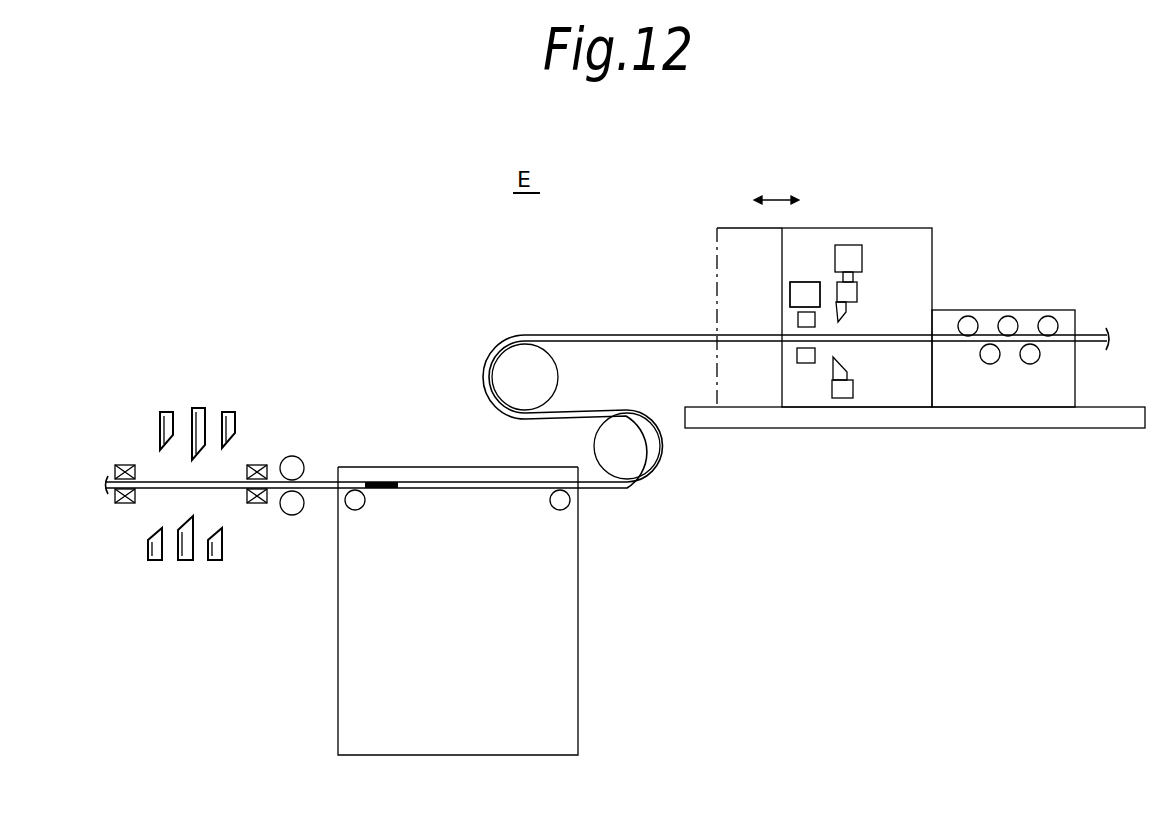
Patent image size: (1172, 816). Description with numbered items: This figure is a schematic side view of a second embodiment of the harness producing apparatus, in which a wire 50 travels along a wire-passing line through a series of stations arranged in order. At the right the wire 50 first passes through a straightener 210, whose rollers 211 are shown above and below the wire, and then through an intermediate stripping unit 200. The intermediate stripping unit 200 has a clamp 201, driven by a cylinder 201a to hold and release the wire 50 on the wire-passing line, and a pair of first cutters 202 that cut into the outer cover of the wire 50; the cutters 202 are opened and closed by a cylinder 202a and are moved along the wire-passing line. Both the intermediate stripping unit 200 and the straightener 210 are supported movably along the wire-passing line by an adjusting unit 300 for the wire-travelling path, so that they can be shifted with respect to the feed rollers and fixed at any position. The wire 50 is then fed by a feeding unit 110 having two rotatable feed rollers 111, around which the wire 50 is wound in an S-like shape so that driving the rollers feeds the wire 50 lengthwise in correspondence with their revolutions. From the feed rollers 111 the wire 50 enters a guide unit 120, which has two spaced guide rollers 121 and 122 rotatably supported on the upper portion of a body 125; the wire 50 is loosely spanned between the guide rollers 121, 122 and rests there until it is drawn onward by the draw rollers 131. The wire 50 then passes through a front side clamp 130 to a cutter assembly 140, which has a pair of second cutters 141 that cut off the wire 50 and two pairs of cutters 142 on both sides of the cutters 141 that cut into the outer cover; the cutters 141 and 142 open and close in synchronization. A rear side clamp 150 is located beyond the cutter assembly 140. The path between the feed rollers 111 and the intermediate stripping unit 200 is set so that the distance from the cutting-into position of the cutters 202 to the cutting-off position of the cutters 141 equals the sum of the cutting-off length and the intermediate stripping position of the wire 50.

The wire 50 is at (1083, 338).
The feeding unit 110 is at (690, 470).
The feed rollers 111 is at (655, 510).
The guide unit 120 is at (578, 628).
The guide roller 121 is at (560, 502).
The guide roller 122 is at (355, 502).
The body 125 is at (578, 596).
The front side clamp 130 is at (253, 465).
The draw rollers 131 is at (295, 467).
The cutter assembly 140 is at (203, 397).
The second cutters 141 is at (185, 560).
The cutters 142 is at (224, 592).
The rear side clamp 150 is at (125, 465).
The intermediate stripping unit 200 is at (932, 250).
The clamp 201 is at (806, 345).
The cylinder 201a is at (790, 295).
The first cutters 202 is at (840, 372).
The cylinder 202a is at (850, 250).
The straightener 210 is at (1037, 310).
The guide rollers 211 is at (1017, 465).
The adjusting unit for the wire-travelling path 300 is at (876, 417).